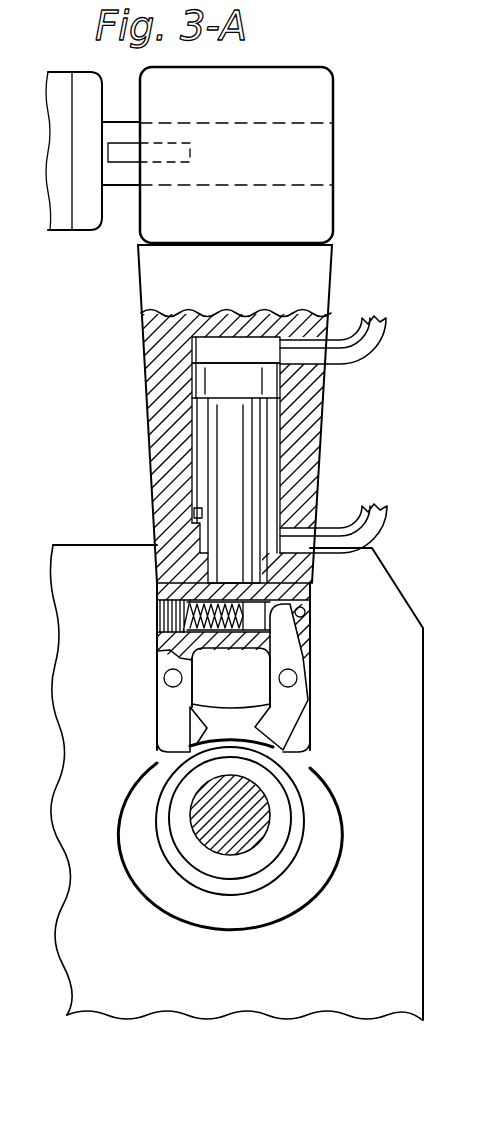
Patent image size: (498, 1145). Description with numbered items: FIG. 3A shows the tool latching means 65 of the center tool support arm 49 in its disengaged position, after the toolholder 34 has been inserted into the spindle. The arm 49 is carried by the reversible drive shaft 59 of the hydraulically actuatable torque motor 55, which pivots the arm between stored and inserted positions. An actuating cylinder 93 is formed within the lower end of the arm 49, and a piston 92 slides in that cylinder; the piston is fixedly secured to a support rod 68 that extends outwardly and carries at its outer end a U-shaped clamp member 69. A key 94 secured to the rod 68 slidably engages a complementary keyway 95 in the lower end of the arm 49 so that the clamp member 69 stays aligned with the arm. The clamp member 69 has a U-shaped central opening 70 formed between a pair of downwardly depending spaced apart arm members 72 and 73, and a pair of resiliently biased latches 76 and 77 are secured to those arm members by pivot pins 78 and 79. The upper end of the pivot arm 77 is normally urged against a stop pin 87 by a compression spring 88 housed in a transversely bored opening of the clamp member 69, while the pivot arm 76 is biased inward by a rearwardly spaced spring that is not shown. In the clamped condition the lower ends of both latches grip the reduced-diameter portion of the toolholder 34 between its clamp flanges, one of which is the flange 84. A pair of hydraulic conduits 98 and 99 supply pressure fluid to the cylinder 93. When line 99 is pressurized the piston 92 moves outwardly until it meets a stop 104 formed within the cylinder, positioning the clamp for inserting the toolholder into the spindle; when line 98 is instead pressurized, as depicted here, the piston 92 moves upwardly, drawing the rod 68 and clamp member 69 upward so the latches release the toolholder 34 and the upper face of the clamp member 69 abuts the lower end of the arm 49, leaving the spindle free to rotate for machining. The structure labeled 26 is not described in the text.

The housing block 26 is at (252, 986).
The conical toolholder 34 is at (200, 805).
The tool support arm 49 is at (320, 218).
The torque motor 55 is at (63, 220).
The drive shaft 59 is at (313, 160).
The tool latching means 65 is at (153, 630).
The support rod 68 is at (243, 429).
The U-shaped clamp member 69 is at (165, 642).
The U-shaped central opening 70 is at (236, 652).
The arm member 72 is at (170, 728).
The arm member 73 is at (300, 735).
The pivot arm 76 is at (200, 712).
The pivot arm 77 is at (287, 708).
The pivot pin 78 is at (166, 680).
The pivot pin 79 is at (297, 675).
The clamp flange 84 is at (278, 828).
The stop pin 87 is at (306, 613).
The compression spring 88 is at (157, 586).
The piston 92 is at (236, 380).
The actuating cylinder 93 is at (200, 348).
The key 94 is at (262, 450).
The keyway 95 is at (265, 580).
The hydraulic conduit 98 is at (378, 525).
The hydraulic conduit 99 is at (345, 337).
The stop 104 is at (197, 513).